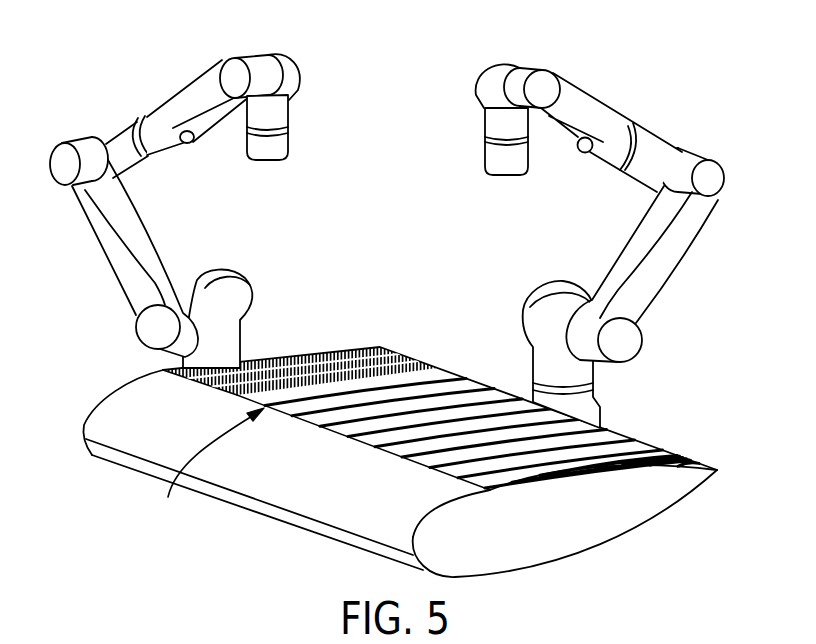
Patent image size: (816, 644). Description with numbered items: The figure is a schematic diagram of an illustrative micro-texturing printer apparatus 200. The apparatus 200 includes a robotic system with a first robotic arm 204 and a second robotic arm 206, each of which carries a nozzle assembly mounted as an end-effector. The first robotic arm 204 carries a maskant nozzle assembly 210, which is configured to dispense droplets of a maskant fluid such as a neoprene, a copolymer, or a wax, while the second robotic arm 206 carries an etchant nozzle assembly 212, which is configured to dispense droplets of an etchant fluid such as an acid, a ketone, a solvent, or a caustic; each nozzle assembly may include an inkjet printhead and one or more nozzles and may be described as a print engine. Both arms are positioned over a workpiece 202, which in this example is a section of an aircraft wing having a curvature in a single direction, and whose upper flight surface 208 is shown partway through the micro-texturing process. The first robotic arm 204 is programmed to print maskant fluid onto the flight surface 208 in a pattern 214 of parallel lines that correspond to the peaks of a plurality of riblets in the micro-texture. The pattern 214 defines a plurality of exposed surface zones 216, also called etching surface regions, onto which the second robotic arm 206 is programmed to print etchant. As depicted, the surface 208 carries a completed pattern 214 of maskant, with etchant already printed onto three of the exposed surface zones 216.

The micro-texturing apparatus 200 is at (389, 304).
The workpiece 202 is at (658, 500).
The first robotic arm 204 is at (673, 247).
The second robotic arm 206 is at (102, 242).
The upper flight surface 208 is at (655, 450).
The maskant nozzle assembly 210 is at (510, 163).
The etchant nozzle assembly 212 is at (272, 148).
The pattern 214 is at (205, 471).
The exposed surface zones 216 is at (407, 452).